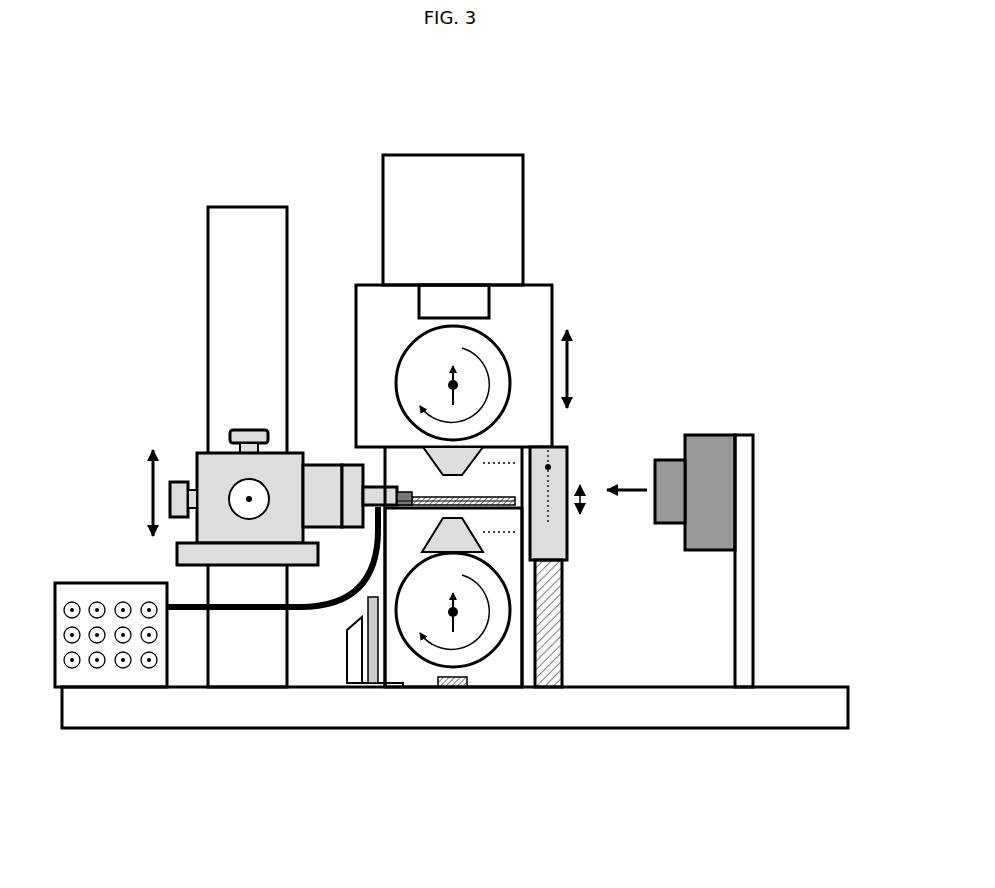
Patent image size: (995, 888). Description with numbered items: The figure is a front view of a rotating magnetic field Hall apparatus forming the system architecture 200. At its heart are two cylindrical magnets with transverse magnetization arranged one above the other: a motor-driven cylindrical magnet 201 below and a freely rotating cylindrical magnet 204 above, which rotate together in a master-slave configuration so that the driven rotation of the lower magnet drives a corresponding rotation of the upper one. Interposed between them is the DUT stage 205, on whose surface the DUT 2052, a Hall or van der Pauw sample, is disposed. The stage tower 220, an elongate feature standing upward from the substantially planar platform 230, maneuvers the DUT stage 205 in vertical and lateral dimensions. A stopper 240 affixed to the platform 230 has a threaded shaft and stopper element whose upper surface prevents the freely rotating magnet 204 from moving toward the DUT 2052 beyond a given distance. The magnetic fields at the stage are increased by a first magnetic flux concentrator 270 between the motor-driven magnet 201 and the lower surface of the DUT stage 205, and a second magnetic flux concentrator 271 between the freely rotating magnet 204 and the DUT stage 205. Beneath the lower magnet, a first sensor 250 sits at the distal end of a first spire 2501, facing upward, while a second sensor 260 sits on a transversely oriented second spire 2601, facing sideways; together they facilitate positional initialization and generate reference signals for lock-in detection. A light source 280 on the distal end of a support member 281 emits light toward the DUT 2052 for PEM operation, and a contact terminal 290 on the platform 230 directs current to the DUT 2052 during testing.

The system architecture 200 is at (558, 287).
The motor-driven cylindrical magnet 201 is at (453, 656).
The freely rotating cylindrical magnet 204 is at (492, 338).
The DUT stage 205 is at (255, 454).
The DUT 2052 is at (447, 497).
The stage tower 220 is at (272, 259).
The platform 230 is at (797, 705).
The stopper 240 is at (562, 525).
The first sensor 250 is at (413, 740).
The first spire 2501 is at (368, 650).
The second sensor 260 is at (351, 710).
The second spire 2601 is at (342, 719).
The first magnetic flux concentrator 270 is at (462, 538).
The second magnetic flux concentrator 271 is at (422, 443).
The light source 280 is at (715, 495).
The support member 281 is at (743, 567).
The contact terminal 290 is at (118, 587).